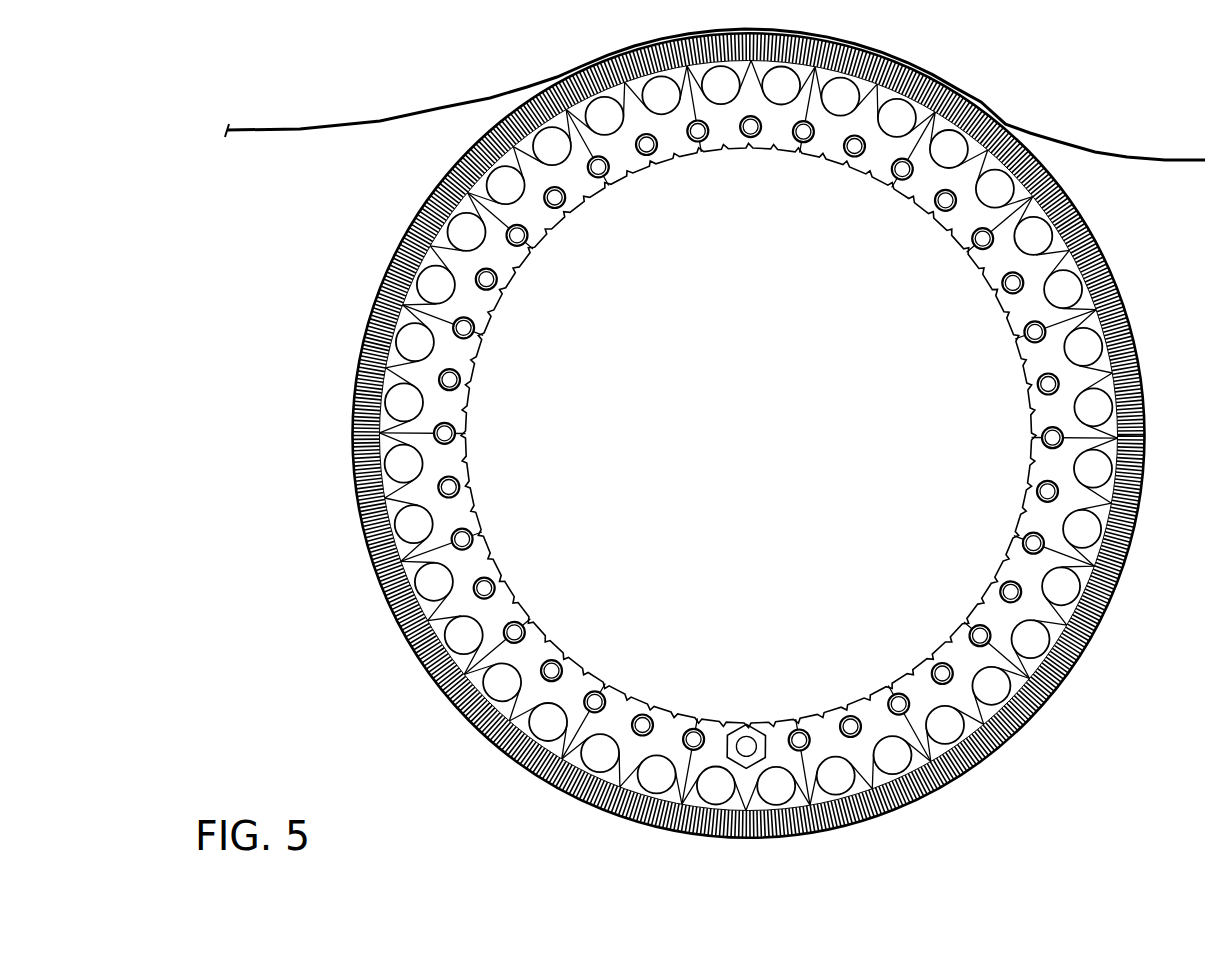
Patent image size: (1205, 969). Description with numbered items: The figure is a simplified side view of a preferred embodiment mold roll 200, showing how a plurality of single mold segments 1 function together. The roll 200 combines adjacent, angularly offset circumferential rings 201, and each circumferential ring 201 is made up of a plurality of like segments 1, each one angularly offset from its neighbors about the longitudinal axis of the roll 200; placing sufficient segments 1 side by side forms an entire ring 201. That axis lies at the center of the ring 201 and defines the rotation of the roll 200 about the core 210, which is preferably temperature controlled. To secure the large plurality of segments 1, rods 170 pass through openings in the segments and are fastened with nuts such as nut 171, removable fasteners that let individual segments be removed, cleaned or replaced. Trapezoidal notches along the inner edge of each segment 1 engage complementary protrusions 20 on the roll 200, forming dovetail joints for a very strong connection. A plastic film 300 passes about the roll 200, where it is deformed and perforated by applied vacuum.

The single mold segment 1 is at (772, 451).
The protrusion 20 is at (520, 272).
The rod 170 is at (733, 727).
The nut 171 is at (746, 737).
The roll 200 is at (1093, 642).
The circumferential ring 201 is at (495, 728).
The core 210 is at (739, 404).
The plastic film 300 is at (480, 102).